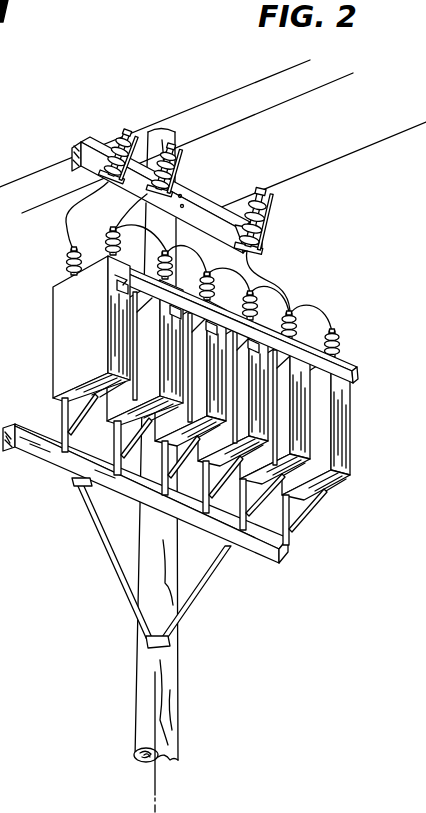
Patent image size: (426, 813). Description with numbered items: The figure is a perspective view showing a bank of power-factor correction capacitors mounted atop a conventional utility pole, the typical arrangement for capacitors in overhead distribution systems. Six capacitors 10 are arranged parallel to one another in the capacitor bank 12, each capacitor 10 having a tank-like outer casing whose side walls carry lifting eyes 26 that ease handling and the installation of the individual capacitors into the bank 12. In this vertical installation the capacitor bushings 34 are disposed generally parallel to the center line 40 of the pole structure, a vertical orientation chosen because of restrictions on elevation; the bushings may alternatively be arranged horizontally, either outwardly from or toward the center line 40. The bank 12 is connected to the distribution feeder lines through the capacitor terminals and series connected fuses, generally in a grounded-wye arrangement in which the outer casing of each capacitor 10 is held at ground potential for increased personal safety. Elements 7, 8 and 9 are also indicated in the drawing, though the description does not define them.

The power line conductors 7 is at (281, 113).
The capacitor bank 8 is at (305, 505).
The utility pole structure 9 is at (80, 652).
The capacitor 10 is at (63, 375).
The capacitor bank 12 is at (270, 207).
The lifting eye 26 is at (118, 281).
The capacitor bushing 34 is at (122, 219).
The center line 40 is at (157, 781).